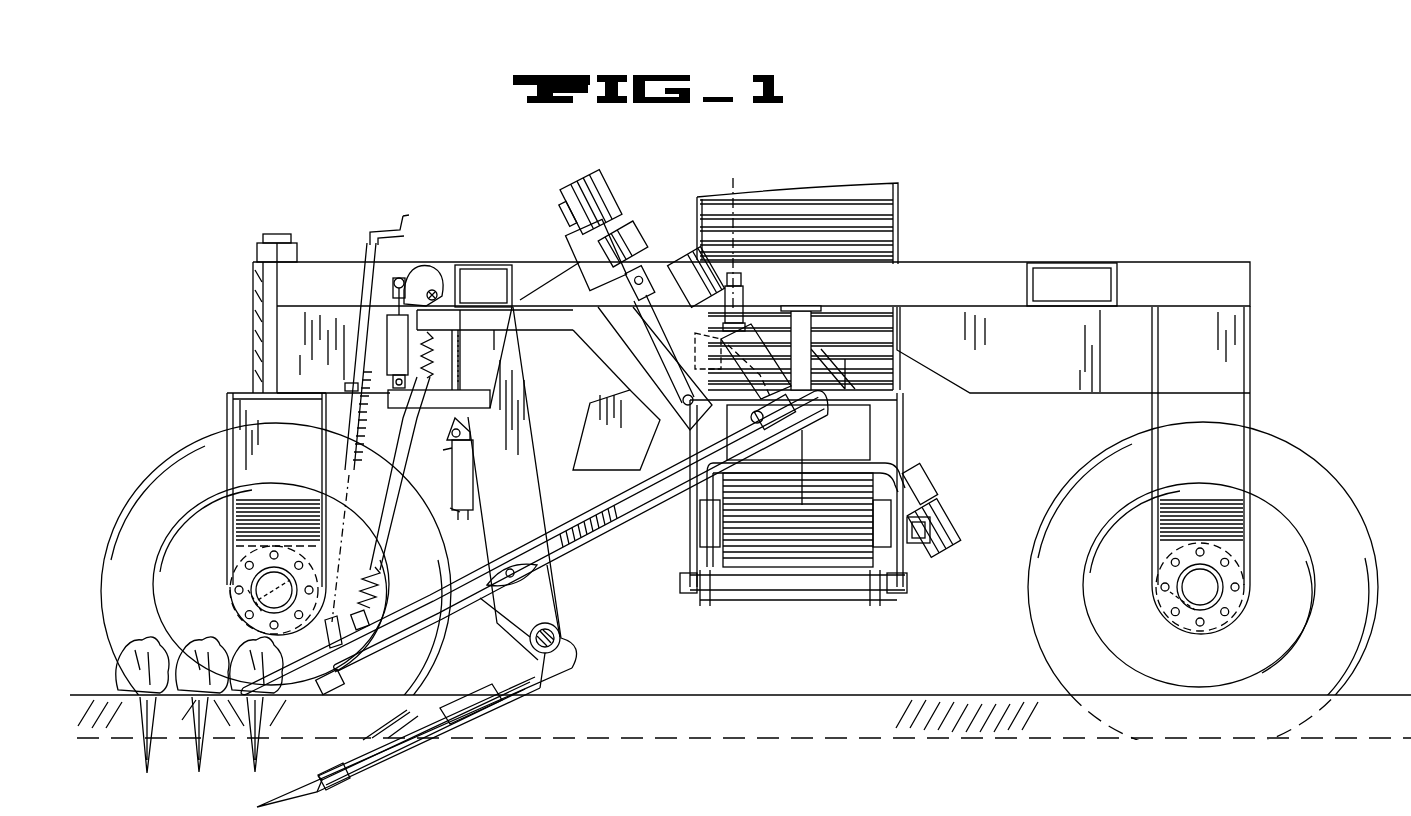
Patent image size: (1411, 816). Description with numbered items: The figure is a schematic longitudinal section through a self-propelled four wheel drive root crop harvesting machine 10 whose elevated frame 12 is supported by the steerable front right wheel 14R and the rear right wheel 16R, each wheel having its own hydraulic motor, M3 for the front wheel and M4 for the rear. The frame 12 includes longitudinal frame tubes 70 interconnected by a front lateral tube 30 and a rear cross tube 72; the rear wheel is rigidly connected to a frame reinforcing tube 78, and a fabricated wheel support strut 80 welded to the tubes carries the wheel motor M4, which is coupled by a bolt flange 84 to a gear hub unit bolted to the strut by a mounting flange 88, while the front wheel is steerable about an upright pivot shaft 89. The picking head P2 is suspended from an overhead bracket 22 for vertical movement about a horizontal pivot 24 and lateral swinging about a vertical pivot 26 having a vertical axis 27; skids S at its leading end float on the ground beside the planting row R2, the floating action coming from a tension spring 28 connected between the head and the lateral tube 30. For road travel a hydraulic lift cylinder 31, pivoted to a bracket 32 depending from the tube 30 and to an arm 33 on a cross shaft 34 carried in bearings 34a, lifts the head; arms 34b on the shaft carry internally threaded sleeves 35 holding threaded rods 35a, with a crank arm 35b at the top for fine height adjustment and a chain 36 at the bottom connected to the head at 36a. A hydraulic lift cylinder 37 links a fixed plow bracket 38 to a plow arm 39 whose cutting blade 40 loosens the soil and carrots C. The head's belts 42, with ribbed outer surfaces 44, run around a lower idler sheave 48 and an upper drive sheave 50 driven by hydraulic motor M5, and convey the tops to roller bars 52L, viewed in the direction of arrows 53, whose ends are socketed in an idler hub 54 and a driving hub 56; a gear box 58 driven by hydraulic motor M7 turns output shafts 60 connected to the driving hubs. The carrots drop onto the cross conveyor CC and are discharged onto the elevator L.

The harvesting machine 10 is at (1076, 144).
The frame 12 is at (1202, 262).
The front right wheel 14R is at (200, 445).
The rear right wheel 16R is at (1266, 434).
The overhead bracket 22 is at (746, 309).
The horizontal pivot 24 is at (700, 418).
The vertical pivot 26 is at (742, 289).
The vertical axis 27 is at (738, 182).
The tension spring 28 is at (380, 573).
The lateral tube 30 is at (488, 264).
The hydraulic lift cylinder 31 is at (388, 361).
The bracket 32 is at (488, 357).
The arm 33 is at (414, 274).
The cross shaft 34 is at (436, 288).
The bearing 34a is at (484, 286).
The arm 34b is at (378, 291).
The internally threaded tubular sleeve 35 is at (357, 347).
The threaded rod 35a is at (350, 418).
The crank arm 35b is at (393, 228).
The chain 36 is at (345, 473).
The chain connection point 36a is at (262, 627).
The hydraulic lift cylinder 37 is at (452, 473).
The plow bracket 38 is at (522, 498).
The plow arm 39 is at (408, 745).
The cutting blade 40 is at (290, 792).
The belt 42 is at (675, 490).
The ribbed outer surface 44 is at (563, 555).
The lower idler sheave 48 is at (340, 692).
The upper drive sheave 50 is at (745, 377).
The left hand roller bars 52L is at (905, 465).
The arrows 53 is at (806, 433).
The idler hub 54 is at (935, 480).
The driving hub 56 is at (688, 457).
The gear box 58 is at (634, 230).
The output shaft 60 is at (716, 312).
The longitudinal frame tube 70 is at (963, 266).
The rear cross tube 72 is at (1058, 263).
The frame reinforcing tube 78 is at (1046, 357).
The wheel support strut 80 is at (1184, 437).
The bolt flange 84 is at (246, 575).
The mounting flange 88 is at (246, 559).
The upright pivot shaft 89 is at (268, 243).
The hydraulic motor M3 is at (255, 595).
The hydraulic motor M4 is at (1224, 598).
The hydraulic motor M5 is at (690, 256).
The hydraulic motor M7 is at (585, 180).
The elevator L is at (888, 206).
The planting row R2 is at (120, 638).
The skid S is at (290, 680).
The carrots C is at (150, 772).
The cross conveyor CC is at (765, 565).
The picking head P2 is at (630, 532).